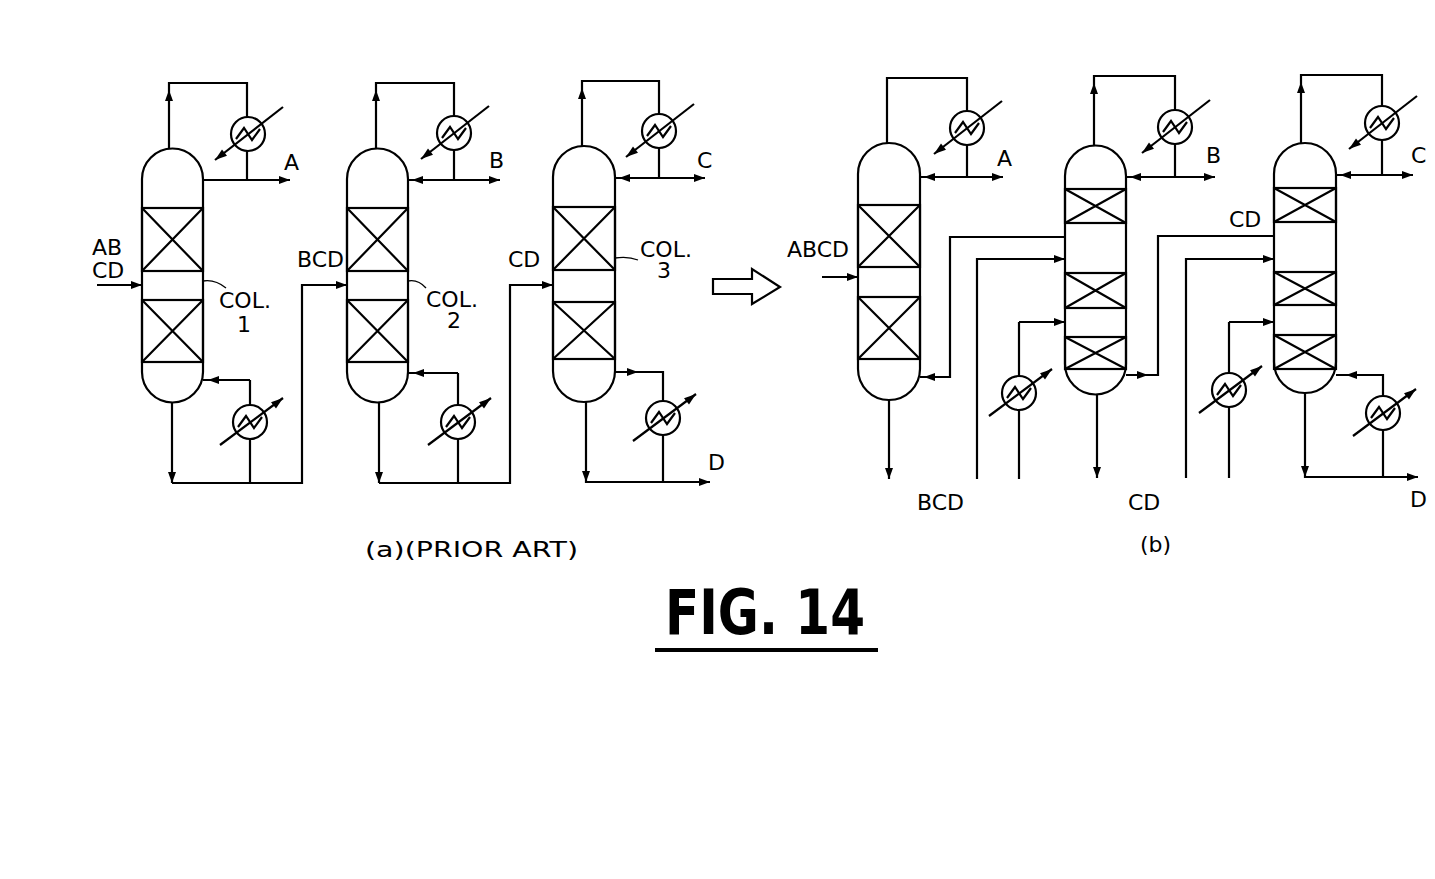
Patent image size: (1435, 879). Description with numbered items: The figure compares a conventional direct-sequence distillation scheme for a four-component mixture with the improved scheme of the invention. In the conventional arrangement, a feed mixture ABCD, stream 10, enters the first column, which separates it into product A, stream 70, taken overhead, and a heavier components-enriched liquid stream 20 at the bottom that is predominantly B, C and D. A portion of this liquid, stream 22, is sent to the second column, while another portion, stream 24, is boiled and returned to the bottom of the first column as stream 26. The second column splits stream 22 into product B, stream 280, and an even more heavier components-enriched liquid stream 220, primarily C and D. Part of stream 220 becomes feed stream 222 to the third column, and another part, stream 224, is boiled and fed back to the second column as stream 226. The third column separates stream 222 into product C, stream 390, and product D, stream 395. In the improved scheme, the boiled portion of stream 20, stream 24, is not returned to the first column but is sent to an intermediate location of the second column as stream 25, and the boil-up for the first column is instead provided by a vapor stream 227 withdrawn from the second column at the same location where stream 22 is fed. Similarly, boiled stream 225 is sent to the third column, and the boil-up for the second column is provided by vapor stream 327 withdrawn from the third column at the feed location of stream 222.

The feed mixture stream 10 is at (124, 288).
The heavier components-enriched liquid stream 20 is at (172, 450).
The heavier components-enriched liquid stream portion 22 is at (302, 490).
The boiled portion stream 24 is at (250, 458).
The boil-up stream to first column 26 is at (250, 380).
The product A stream 70 is at (262, 185).
The even more heavier components-enriched liquid stream 220 is at (379, 452).
The feed stream to third column 222 is at (510, 437).
The boiled portion stream of second column bottoms 224 is at (458, 487).
The boil-up stream to second column 226 is at (443, 373).
The product B stream 280 is at (470, 188).
The product C stream 390 is at (676, 186).
The product D stream 395 is at (686, 488).
The boiled stream to second column 25 is at (1045, 322).
The boiled stream to third column 225 is at (1240, 322).
The vapor stream for first column boil-up 227 is at (1015, 237).
The vapor stream for second column boil-up 327 is at (1192, 236).